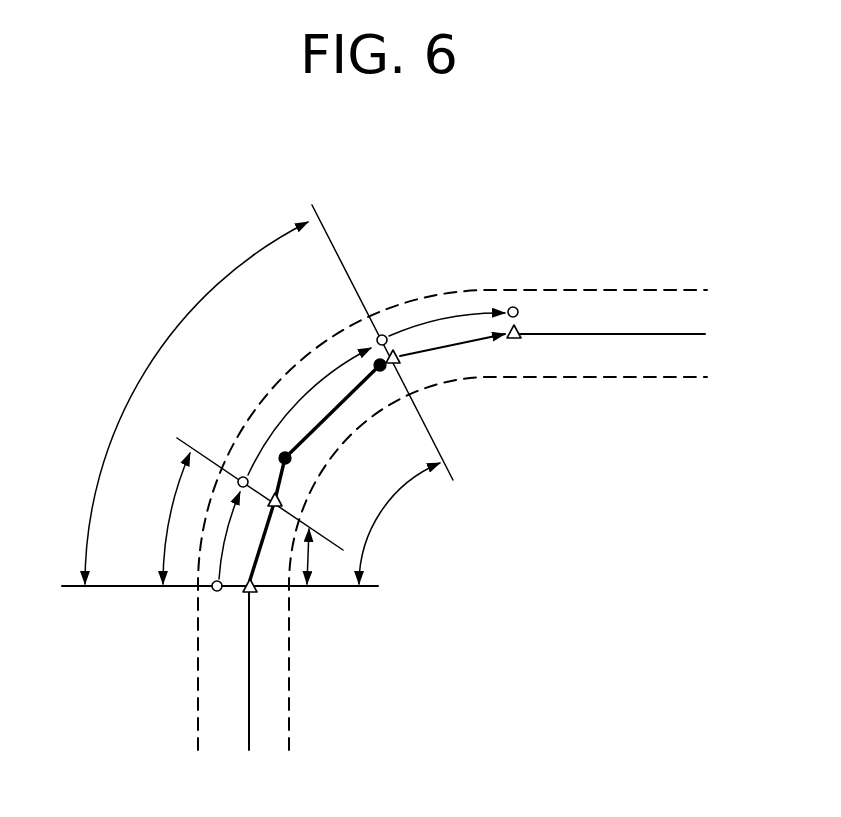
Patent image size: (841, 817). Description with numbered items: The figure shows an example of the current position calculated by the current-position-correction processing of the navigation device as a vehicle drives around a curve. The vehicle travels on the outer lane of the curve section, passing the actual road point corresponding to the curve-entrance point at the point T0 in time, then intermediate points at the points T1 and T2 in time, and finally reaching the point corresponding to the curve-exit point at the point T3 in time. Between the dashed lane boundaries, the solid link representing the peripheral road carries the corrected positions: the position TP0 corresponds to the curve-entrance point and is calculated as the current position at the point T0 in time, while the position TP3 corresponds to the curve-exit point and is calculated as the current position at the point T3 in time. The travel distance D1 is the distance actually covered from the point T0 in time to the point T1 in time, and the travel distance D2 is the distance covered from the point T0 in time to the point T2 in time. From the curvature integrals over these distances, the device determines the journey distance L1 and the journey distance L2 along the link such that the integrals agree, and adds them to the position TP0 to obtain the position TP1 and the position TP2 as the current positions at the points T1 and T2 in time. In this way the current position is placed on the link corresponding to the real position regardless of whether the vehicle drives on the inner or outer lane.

The point T0 in time T0 is at (213, 592).
The point T1 in time T1 is at (243, 476).
The point T2 in time T2 is at (383, 334).
The point T3 in time T3 is at (513, 306).
The position TP0 is at (252, 594).
The position TP1 is at (272, 508).
The position TP2 is at (399, 360).
The position TP3 is at (514, 341).
The travel distance D1 is at (160, 518).
The travel distance D2 is at (196, 403).
The journey distance L1 is at (327, 558).
The journey distance L2 is at (399, 523).